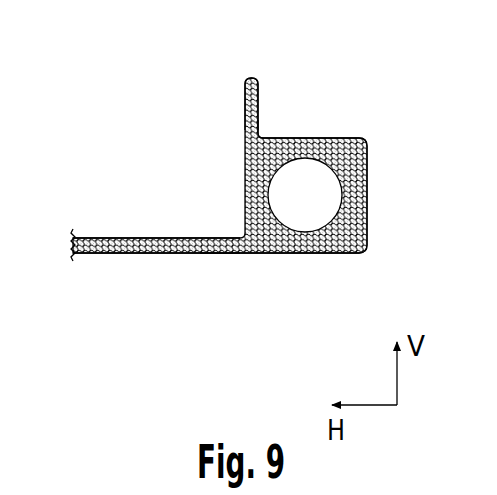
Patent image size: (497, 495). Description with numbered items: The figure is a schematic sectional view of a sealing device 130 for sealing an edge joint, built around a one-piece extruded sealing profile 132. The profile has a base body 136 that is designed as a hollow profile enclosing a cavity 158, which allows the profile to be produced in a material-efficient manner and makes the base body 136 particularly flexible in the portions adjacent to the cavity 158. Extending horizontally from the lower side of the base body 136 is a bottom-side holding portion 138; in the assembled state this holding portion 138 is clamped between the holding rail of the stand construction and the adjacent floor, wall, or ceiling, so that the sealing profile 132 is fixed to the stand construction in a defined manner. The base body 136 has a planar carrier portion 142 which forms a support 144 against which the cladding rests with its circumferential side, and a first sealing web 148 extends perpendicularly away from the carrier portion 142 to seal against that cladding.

The sealing device 130 is at (125, 77).
The sealing profile 132 is at (232, 260).
The second base body 136 is at (367, 195).
The holding portion 138 is at (147, 254).
The carrier portion 142 is at (340, 138).
The support 144 is at (282, 137).
The first sealing web 148 is at (245, 95).
The cavity 158 is at (303, 215).